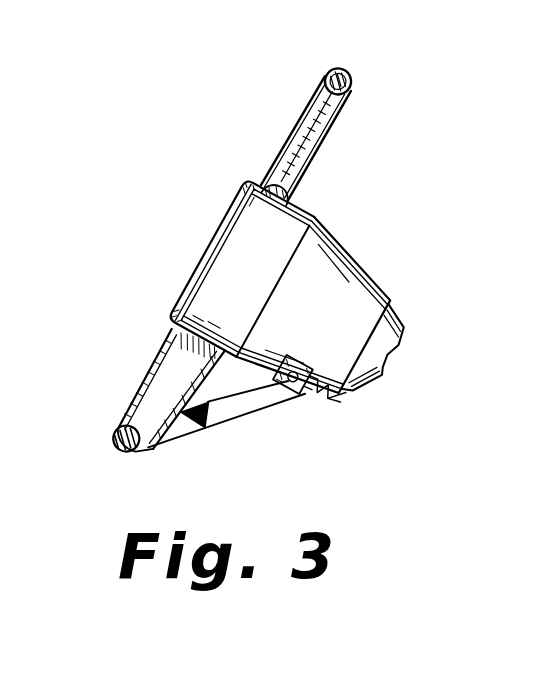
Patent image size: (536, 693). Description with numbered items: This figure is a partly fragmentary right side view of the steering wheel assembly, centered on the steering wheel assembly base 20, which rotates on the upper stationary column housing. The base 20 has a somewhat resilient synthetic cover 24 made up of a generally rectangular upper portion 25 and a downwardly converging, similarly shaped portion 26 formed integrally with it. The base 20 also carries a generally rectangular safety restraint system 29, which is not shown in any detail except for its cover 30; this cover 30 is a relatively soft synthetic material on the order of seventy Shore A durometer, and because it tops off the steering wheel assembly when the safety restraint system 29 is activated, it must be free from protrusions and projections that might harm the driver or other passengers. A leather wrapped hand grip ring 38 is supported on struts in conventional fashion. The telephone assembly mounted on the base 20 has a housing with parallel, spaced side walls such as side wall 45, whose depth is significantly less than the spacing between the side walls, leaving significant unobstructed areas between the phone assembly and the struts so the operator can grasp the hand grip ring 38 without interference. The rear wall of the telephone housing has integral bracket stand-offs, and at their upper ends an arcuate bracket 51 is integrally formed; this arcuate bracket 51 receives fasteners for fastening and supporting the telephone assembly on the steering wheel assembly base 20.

The steering wheel assembly base 20 is at (358, 257).
The synthetic cover 24 is at (343, 397).
The upper portion 25 is at (290, 206).
The downwardly converging portion 26 is at (343, 309).
The safety restraint system 29 is at (222, 201).
The cover 30 is at (190, 271).
The hand grip ring 38 is at (325, 78).
The side wall 45 is at (160, 411).
The arcuate bracket 51 is at (318, 397).